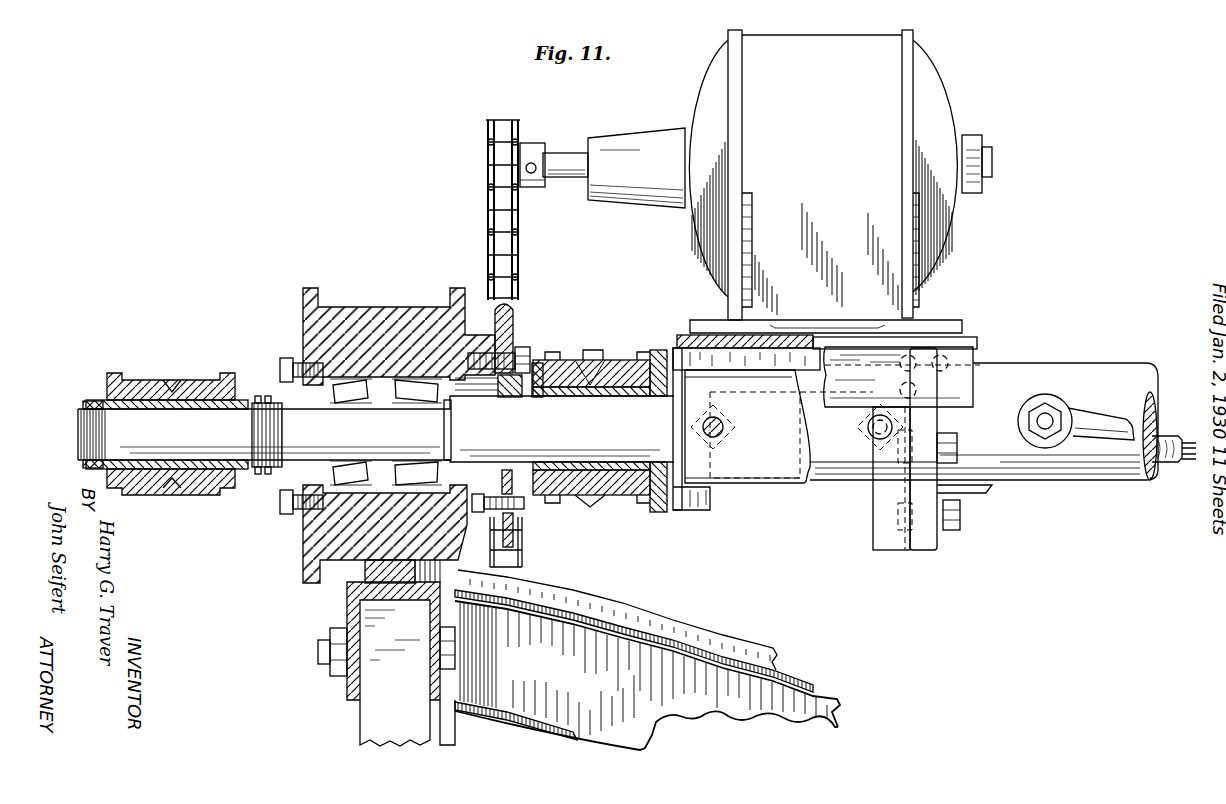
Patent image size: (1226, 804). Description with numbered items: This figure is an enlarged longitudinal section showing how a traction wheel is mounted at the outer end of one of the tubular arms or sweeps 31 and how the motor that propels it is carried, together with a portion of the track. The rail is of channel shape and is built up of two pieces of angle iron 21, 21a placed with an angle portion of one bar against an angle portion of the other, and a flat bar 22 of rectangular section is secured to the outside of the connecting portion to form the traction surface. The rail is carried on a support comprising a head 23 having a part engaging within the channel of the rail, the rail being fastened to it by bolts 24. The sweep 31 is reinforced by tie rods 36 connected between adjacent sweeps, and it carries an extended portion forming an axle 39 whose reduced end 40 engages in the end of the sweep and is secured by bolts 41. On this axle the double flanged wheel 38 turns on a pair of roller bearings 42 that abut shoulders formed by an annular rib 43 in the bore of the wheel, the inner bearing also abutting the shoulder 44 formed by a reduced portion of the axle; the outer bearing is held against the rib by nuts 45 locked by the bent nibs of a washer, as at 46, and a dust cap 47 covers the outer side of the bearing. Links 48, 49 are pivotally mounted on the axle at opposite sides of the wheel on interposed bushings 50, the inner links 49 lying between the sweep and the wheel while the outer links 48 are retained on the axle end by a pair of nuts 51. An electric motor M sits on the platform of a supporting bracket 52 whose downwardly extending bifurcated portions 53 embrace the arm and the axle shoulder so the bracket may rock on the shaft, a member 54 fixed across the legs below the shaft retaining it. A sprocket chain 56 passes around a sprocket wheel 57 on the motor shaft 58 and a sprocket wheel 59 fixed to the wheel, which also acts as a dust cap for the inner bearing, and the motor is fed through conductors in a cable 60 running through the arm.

The angle iron 21 is at (345, 680).
The angle iron 21a is at (438, 668).
The flat bar 22 is at (578, 597).
The head 23 is at (407, 678).
The bolts 24 is at (318, 655).
The arms or sweeps 31 is at (1070, 374).
The tie rods 36 is at (1098, 425).
The double flanged wheel 38 is at (372, 318).
The axle 39 is at (376, 429).
The reduced end 40 is at (752, 465).
The bolts 41 is at (724, 431).
The roller bearings 42 is at (352, 404).
The annular rib 43 is at (392, 400).
The shoulder of reduced axle portion 44 is at (452, 432).
The nuts 45 is at (269, 475).
The locking washer nibs 46 is at (268, 404).
The dust cap 47 is at (288, 368).
The links 48 is at (188, 380).
The links 49 is at (603, 360).
The bushings 50 is at (188, 470).
The nuts 51 is at (98, 412).
The supporting bracket 52 is at (975, 338).
The bifurcated portions 53 is at (678, 512).
The member 54 is at (960, 490).
The sprocket chain 56 is at (522, 250).
The sprocket wheel 57 is at (529, 190).
The motor shaft 58 is at (553, 157).
The sprocket wheel 59 is at (520, 335).
The cable 60 is at (1165, 443).
The electric motor M is at (840, 181).